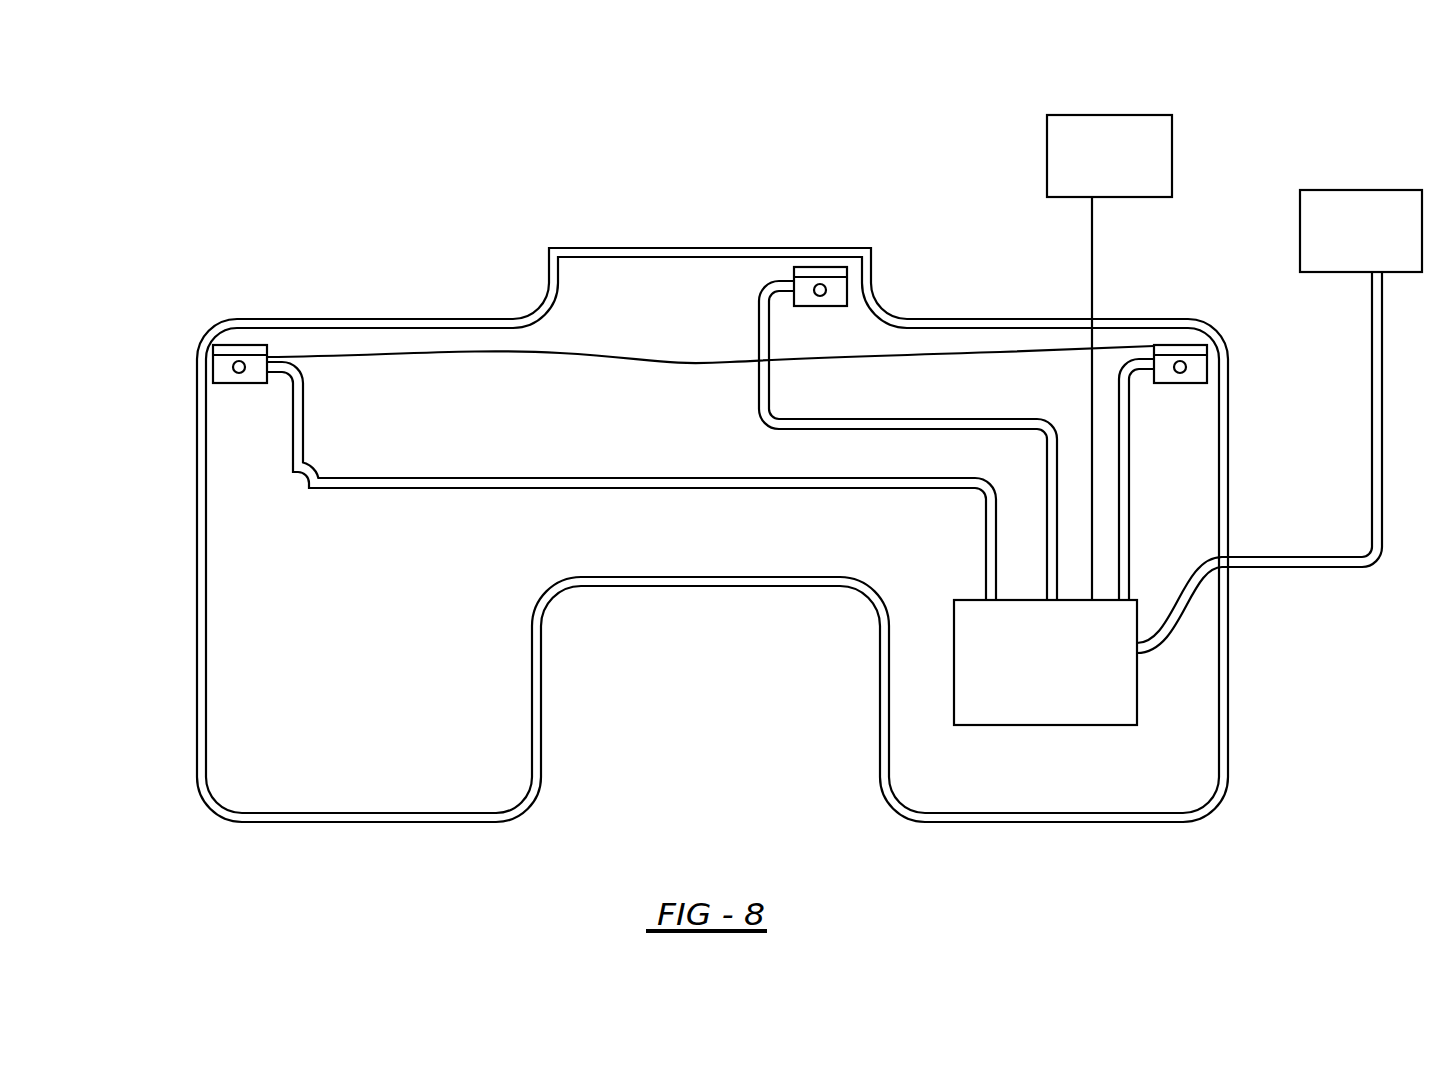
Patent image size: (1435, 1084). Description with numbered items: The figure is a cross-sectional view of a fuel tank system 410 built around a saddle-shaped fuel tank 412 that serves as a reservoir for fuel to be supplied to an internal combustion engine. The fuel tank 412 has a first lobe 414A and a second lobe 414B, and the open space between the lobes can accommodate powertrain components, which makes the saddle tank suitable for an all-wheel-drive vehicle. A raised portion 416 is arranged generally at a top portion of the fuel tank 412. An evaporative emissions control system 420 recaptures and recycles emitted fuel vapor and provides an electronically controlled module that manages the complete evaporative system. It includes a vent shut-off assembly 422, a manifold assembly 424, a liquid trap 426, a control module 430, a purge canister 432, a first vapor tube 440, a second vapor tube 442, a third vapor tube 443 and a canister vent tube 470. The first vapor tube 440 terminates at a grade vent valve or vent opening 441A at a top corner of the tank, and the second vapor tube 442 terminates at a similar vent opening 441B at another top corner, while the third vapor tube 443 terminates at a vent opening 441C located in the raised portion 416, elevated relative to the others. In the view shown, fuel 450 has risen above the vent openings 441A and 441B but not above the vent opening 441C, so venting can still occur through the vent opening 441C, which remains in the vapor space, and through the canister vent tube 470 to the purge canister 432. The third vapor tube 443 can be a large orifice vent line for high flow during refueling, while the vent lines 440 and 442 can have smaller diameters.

The fuel tank system 410 is at (1255, 205).
The fuel tank 412 is at (1230, 383).
The first lobe 414A is at (1187, 722).
The second lobe 414B is at (258, 647).
The raised portion 416 is at (582, 284).
The evaporative emissions control system 420 is at (892, 168).
The vent shut-off assembly 422 is at (1047, 726).
The manifold assembly 424 is at (1007, 708).
The liquid trap 426 is at (993, 673).
The control module 430 is at (1068, 165).
The purge canister 432 is at (1397, 203).
The first vapor tube 440 is at (467, 488).
The vent opening 441A is at (238, 384).
The vent opening 441B is at (1180, 384).
The vent opening 441C is at (830, 307).
The second vapor tube 442 is at (1130, 493).
The third vapor tube 443 is at (985, 417).
The fuel 450 is at (645, 353).
The canister vent tube 470 is at (1383, 503).